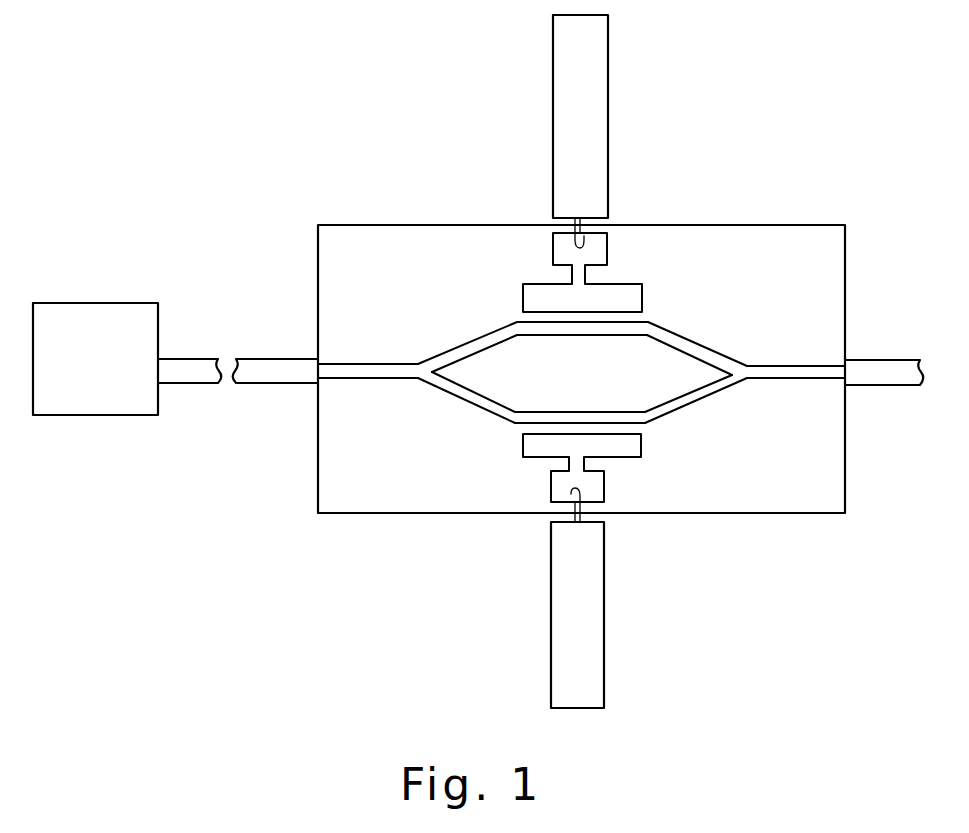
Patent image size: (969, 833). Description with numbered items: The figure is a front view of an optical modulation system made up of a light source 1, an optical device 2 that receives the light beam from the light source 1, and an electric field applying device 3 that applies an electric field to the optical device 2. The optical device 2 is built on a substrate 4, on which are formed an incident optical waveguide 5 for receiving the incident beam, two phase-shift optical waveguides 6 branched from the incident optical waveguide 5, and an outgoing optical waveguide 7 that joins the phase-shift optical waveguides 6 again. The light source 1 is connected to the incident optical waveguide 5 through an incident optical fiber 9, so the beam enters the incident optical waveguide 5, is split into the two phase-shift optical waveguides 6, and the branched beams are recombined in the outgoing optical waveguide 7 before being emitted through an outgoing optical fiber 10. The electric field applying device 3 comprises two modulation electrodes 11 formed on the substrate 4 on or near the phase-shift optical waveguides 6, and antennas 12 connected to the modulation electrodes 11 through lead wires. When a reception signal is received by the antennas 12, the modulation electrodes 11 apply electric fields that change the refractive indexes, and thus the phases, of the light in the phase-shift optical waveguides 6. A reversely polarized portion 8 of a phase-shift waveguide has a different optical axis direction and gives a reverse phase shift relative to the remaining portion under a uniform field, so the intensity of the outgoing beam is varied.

The light source 1 is at (98, 303).
The optical device 2 is at (581, 361).
The electric field applying device 3 is at (617, 361).
The substrate 4 is at (408, 503).
The incident optical waveguide 5 is at (348, 370).
The phase-shift optical waveguides 6 is at (502, 328).
The outgoing optical waveguide 7 is at (775, 367).
The reversely polarized portion 8 is at (613, 410).
The incident optical fiber 9 is at (273, 383).
The outgoing optical fiber 10 is at (893, 363).
The modulation electrodes 11 is at (640, 292).
The antennas 12 is at (602, 84).